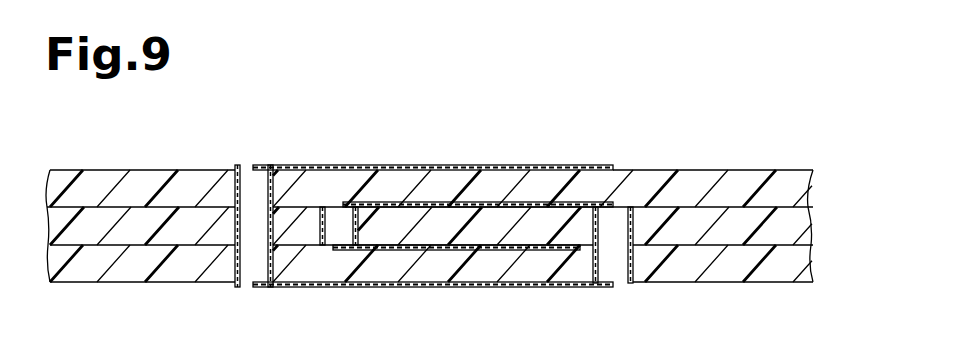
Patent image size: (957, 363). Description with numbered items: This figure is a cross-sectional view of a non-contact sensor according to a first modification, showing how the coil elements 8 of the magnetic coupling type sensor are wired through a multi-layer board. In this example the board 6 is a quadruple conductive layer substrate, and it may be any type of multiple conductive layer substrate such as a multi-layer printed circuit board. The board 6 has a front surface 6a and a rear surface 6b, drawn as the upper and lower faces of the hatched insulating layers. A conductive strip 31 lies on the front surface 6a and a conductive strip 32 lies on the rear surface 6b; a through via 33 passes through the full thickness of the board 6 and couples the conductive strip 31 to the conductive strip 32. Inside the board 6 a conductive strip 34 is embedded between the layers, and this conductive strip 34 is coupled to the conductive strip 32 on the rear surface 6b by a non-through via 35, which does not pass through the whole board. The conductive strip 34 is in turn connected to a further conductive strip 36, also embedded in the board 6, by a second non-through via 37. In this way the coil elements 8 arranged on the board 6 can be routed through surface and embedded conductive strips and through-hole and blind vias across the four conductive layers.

The board 6 is at (92, 168).
The front surface 6a is at (147, 168).
The rear surface 6b is at (130, 284).
The coil element 8 is at (285, 164).
The conductive strip 31 is at (408, 164).
The conductive strip 32 is at (398, 288).
The through via 33 is at (230, 271).
The conductive strip 34 is at (483, 202).
The non-through via 35 is at (633, 258).
The conductive strip 36 is at (482, 251).
The non-through via 37 is at (320, 204).